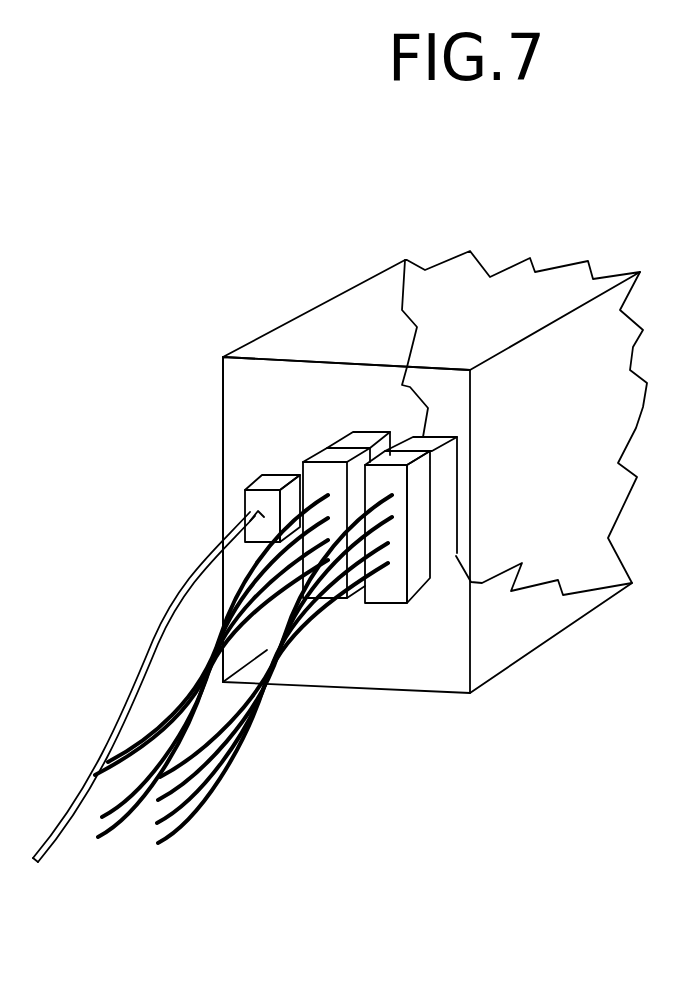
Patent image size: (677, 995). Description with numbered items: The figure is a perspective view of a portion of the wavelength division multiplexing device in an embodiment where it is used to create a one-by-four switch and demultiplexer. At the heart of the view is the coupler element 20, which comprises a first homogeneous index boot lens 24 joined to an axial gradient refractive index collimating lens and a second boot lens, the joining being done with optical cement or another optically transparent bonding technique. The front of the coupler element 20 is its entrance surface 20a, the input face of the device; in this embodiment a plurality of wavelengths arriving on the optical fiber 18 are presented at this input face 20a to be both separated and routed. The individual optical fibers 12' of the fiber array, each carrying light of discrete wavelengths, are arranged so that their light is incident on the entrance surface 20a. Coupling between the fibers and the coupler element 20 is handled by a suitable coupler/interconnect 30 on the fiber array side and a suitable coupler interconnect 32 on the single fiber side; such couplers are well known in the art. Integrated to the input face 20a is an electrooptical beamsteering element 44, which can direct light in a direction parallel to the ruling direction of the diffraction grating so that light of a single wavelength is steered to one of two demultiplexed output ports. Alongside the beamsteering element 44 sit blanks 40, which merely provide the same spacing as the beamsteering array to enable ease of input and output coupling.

The coupler element 20 is at (297, 263).
The entrance surface 20a is at (352, 398).
The first homogeneous index boot lens 24 is at (442, 312).
The coupler/interconnect 30 is at (267, 477).
The electrooptical beamsteering element 44 is at (278, 462).
The coupler interconnect 32 is at (330, 478).
The blanks 40 is at (385, 432).
The optical fiber 18 is at (153, 640).
The optical fibers 12' is at (243, 669).